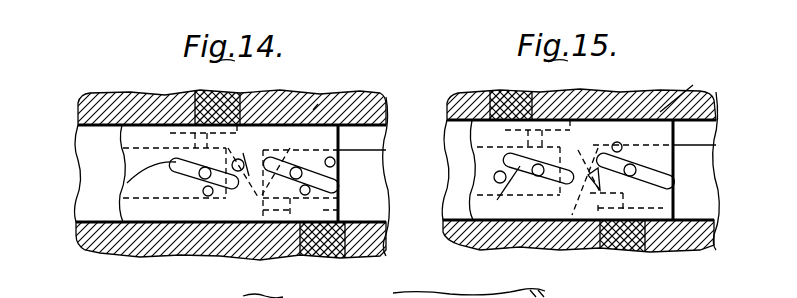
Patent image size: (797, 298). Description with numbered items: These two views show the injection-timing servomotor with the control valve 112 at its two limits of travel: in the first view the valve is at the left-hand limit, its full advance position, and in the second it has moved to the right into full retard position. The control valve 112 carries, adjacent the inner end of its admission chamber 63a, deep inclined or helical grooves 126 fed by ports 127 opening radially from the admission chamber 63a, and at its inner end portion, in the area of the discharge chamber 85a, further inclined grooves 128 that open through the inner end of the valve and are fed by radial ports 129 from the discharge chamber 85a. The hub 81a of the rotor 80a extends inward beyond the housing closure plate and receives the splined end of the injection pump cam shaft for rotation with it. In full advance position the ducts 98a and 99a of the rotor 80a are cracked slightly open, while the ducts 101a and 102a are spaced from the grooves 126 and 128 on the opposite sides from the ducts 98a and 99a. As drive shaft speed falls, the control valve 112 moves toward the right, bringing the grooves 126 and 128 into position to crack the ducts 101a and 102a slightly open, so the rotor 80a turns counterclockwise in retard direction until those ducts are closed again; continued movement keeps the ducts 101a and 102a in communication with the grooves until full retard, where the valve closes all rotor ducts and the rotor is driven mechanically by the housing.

In FIG. 14, the hub 81a is at (112, 96).
In FIG. 15, the hub 81a is at (460, 97).
In FIG. 14, the rotor 80a is at (73, 238).
In FIG. 15, the rotor 80a is at (471, 240).
In FIG. 14, the admission chamber 63a is at (122, 157).
In FIG. 15, the admission chamber 63a is at (500, 147).
In FIG. 14, the control valve 112 is at (116, 137).
In FIG. 15, the control valve 112 is at (466, 130).
In FIG. 14, the discharge chamber 85a is at (313, 110).
In FIG. 15, the discharge chamber 85a is at (691, 89).
In FIG. 14, the duct 98a is at (192, 96).
In FIG. 15, the duct 98a is at (481, 93).
In FIG. 14, the duct 101a is at (266, 93).
In FIG. 15, the duct 101a is at (583, 85).
In FIG. 14, the inclined or helical groove 126 is at (127, 183).
In FIG. 15, the inclined or helical groove 126 is at (620, 90).
In FIG. 14, the port 127 is at (203, 180).
In FIG. 15, the port 127 is at (585, 90).
In FIG. 14, the radial port 129 is at (298, 168).
In FIG. 15, the radial port 129 is at (675, 165).
In FIG. 14, the inclined or helical groove 128 is at (335, 165).
In FIG. 15, the inclined or helical groove 128 is at (676, 192).
In FIG. 14, the duct 99a is at (339, 186).
In FIG. 15, the duct 99a is at (557, 247).
In FIG. 14, the duct 102a is at (348, 140).
In FIG. 15, the duct 102a is at (675, 138).